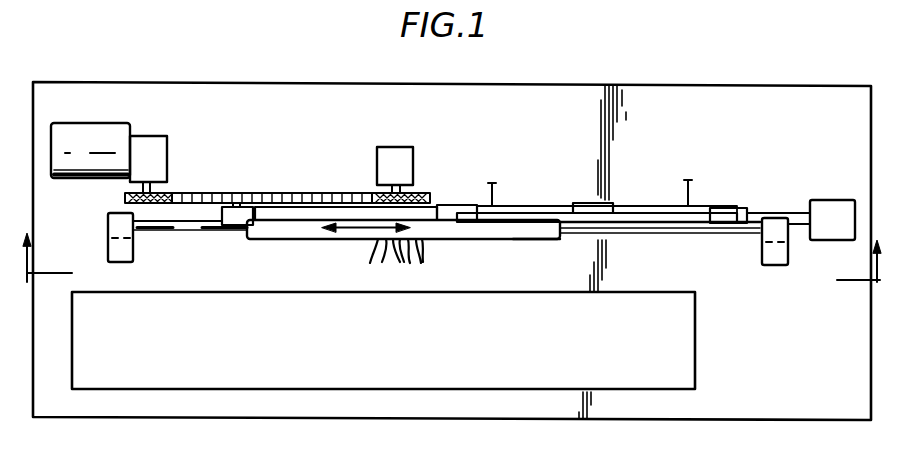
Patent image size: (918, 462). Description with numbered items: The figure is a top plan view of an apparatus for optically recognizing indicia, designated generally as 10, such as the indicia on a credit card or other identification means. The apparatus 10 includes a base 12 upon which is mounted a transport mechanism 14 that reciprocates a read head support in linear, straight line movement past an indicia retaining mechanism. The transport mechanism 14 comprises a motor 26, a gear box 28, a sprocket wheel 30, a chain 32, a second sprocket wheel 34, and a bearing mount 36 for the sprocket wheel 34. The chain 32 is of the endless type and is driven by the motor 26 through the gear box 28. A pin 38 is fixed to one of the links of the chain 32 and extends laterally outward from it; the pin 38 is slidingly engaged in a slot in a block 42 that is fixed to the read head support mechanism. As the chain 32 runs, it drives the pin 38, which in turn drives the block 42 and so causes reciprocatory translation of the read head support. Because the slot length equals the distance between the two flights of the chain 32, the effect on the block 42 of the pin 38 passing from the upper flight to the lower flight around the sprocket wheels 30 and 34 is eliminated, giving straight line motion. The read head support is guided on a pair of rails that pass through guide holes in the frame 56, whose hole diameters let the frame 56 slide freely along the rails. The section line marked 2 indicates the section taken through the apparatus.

The apparatus for optically recognizing indicia 10 is at (170, 72).
The base 12 is at (147, 418).
The transport mechanism 14 is at (209, 242).
The motor 26 is at (110, 133).
The gear box 28 is at (167, 148).
The sprocket wheel 30 is at (125, 197).
The chain 32 is at (306, 194).
The sprocket wheel 34 is at (418, 195).
The bearing mount 36 is at (398, 165).
The pin 38 is at (238, 207).
The block 42 is at (255, 206).
The frame 56 is at (503, 226).
The section line 2- 2 is at (452, 257).